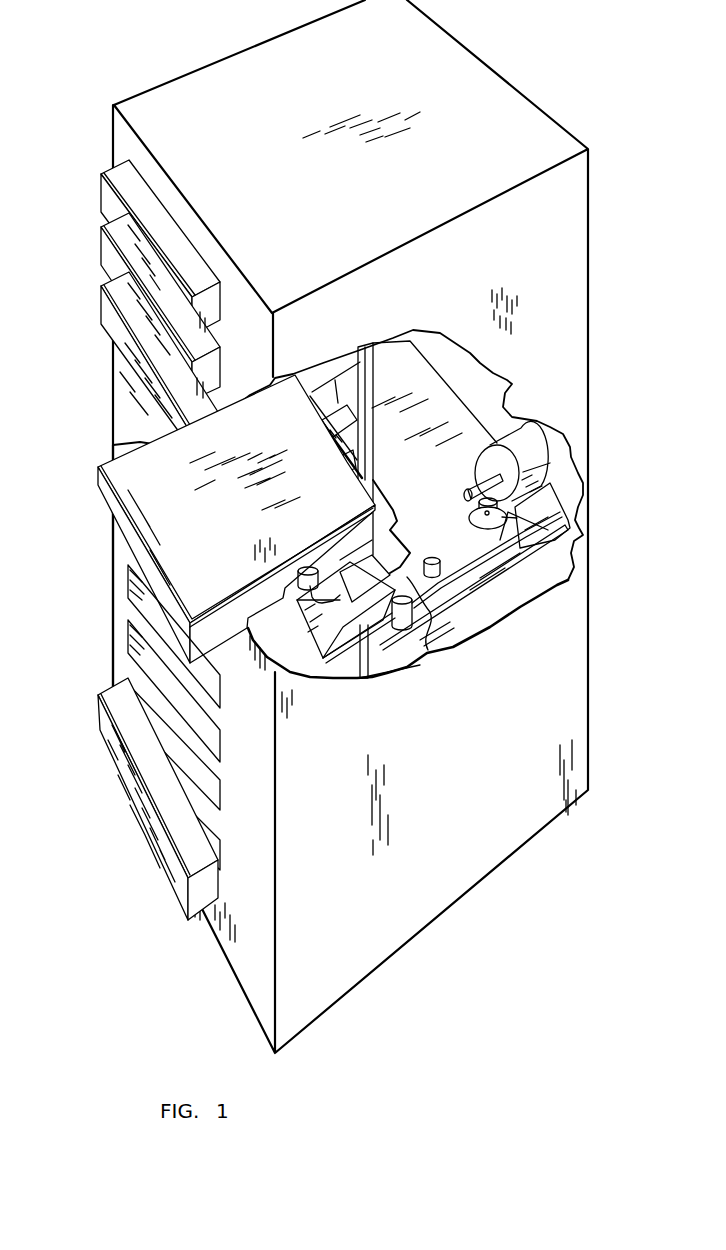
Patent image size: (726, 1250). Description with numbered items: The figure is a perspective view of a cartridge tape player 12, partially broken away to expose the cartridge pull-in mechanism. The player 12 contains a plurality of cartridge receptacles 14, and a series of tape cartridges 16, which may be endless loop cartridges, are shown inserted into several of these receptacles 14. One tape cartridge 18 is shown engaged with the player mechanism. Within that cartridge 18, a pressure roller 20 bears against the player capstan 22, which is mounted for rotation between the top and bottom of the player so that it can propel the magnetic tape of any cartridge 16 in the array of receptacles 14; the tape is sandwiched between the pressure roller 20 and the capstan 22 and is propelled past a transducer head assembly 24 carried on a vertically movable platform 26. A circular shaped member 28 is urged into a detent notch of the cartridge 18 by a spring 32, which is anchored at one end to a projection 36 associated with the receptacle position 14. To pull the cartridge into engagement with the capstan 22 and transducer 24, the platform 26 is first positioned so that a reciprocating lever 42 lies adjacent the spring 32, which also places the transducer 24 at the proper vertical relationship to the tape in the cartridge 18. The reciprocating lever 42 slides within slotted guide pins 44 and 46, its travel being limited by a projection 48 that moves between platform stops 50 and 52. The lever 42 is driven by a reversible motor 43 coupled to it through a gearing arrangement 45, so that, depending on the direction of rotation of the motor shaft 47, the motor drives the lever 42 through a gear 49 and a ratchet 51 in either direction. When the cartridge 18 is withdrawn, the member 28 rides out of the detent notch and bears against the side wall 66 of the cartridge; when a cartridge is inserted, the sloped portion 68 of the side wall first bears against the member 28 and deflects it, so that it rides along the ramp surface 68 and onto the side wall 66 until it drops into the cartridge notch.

The tape cartridge player 12 is at (228, 24).
The cartridge receptacles 14 is at (143, 677).
The tape cartridges 16 is at (101, 257).
The tape cartridge 18 is at (103, 493).
The pressure roller 20 is at (374, 447).
The capstan 22 is at (378, 376).
The transducer head assembly 24 is at (318, 375).
The vertically movable platform 26 is at (576, 548).
The circular shaped member 28 is at (312, 546).
The spring 32 is at (378, 678).
The projection 36 is at (388, 488).
The reciprocating lever 42 is at (445, 642).
The reversible motor 43 is at (514, 386).
The slotted guide pin 44 is at (407, 670).
The gearing arrangement 45 is at (459, 514).
The slotted guide pin 46 is at (433, 556).
The motor shaft 47 is at (445, 492).
The projection 48 is at (460, 607).
The gear 49 is at (503, 513).
The platform stop 50 is at (433, 620).
The ratchet 51 is at (495, 582).
The platform stop 52 is at (517, 562).
The side wall 66 is at (352, 521).
The sloped portion 68 is at (370, 493).